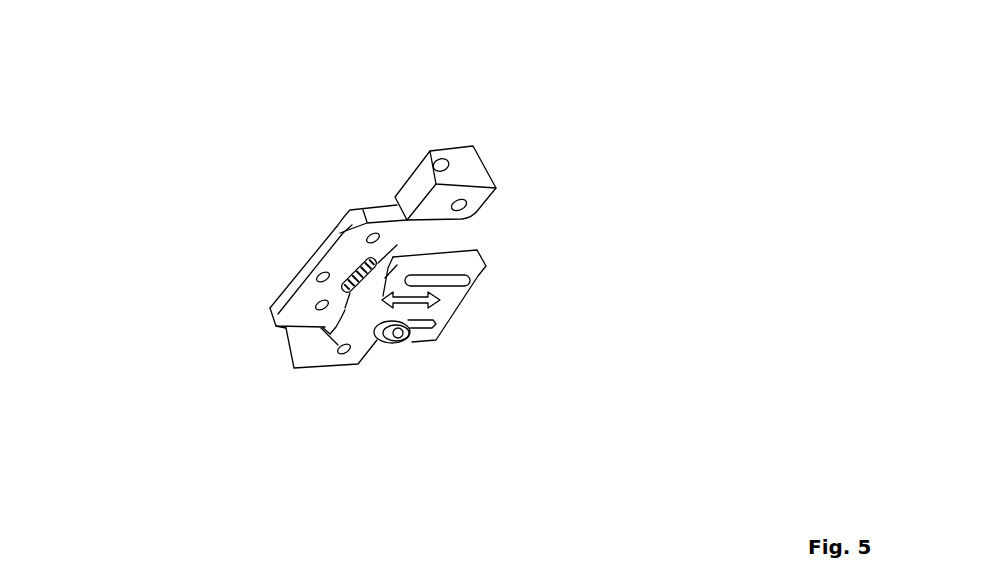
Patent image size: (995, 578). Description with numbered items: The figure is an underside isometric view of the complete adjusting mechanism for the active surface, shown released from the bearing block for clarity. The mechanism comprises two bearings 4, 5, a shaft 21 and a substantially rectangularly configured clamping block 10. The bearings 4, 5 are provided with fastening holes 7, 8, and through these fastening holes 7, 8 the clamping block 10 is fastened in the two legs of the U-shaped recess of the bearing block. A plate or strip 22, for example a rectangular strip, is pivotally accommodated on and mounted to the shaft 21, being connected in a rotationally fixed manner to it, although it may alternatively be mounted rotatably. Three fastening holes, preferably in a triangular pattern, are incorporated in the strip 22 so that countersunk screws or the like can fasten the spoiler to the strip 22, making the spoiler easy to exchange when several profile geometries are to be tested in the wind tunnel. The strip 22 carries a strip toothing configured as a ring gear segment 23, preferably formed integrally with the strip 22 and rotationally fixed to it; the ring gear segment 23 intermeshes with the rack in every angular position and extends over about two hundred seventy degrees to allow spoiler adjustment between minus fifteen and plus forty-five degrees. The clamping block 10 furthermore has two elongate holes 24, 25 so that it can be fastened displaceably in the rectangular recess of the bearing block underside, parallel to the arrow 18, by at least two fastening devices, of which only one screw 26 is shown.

The bearing 4 is at (290, 348).
The bearing 5 is at (477, 175).
The fastening hole 7 is at (348, 355).
The fastening hole 8 is at (465, 203).
The clamping block 10 is at (447, 300).
The arrow 18 is at (392, 308).
The shaft 21 is at (443, 160).
The strip 22 is at (290, 278).
The ring gear segment 23 is at (412, 247).
The elongate hole 24 is at (421, 333).
The elongate hole 25 is at (445, 282).
The screw 26 is at (402, 337).